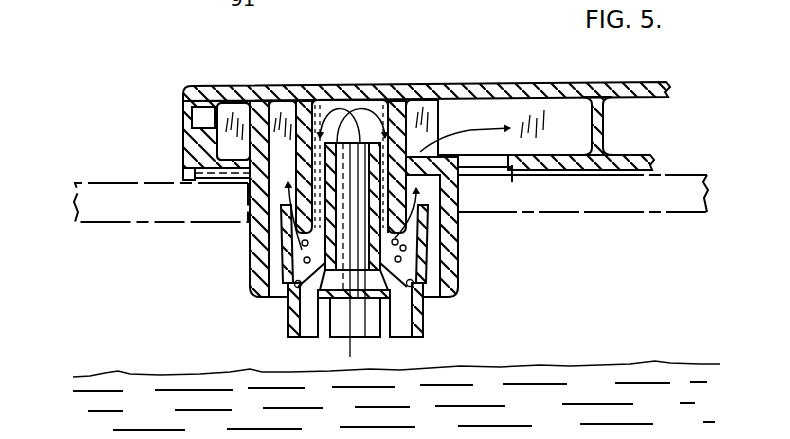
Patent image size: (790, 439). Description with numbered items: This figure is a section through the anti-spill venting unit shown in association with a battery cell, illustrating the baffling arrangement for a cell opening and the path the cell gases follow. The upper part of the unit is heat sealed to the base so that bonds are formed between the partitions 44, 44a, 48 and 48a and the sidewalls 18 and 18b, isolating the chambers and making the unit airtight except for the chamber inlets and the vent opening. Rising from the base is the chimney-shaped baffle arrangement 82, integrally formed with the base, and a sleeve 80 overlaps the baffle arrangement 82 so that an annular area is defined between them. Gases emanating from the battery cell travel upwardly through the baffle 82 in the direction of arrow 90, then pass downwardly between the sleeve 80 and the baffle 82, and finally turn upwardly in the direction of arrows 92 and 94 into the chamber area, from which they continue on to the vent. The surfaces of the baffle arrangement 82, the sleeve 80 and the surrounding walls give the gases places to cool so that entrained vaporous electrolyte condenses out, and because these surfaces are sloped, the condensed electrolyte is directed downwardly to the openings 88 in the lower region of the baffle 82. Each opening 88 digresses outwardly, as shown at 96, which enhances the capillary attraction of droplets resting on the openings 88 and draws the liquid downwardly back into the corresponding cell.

The sidewall 18 is at (192, 153).
The sidewall 18b is at (187, 108).
The partition 48a is at (259, 104).
The partition 48 is at (264, 127).
The baffle arrangement 82 is at (335, 130).
The sleeve 80 is at (418, 100).
The arrow 94 is at (483, 113).
The partition 44a is at (592, 95).
The partition 44 is at (598, 136).
The arrow 92 is at (432, 207).
The opening 88 is at (297, 287).
The outward digression of opening 96 is at (293, 328).
The arrow 90 is at (338, 325).